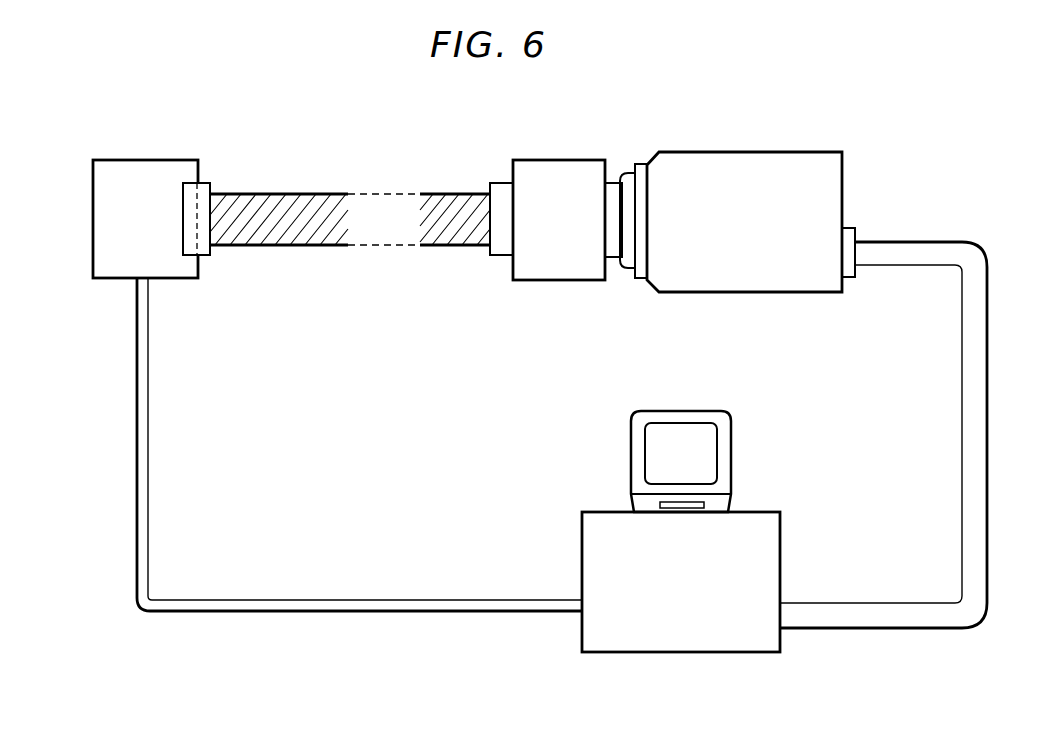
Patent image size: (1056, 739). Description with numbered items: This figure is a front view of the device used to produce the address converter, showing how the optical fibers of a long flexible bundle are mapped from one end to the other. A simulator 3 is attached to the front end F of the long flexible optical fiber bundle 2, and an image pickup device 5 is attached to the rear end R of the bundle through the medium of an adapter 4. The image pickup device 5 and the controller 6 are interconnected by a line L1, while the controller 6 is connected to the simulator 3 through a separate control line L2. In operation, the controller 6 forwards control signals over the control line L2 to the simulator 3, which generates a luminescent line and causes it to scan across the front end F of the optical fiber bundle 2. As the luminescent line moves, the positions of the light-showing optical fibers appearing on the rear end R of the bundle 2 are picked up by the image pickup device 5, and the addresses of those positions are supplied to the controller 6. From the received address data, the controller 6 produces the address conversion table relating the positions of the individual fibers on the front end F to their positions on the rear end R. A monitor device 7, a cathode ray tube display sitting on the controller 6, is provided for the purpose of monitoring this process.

The optical fiber bundle 2 is at (286, 200).
The simulator 3 is at (149, 169).
The adapter 4 is at (558, 167).
The image pickup device 5 is at (746, 157).
The controller 6 is at (776, 553).
The monitor device 7 is at (726, 452).
The front end F is at (206, 187).
The rear end R is at (500, 184).
The line L1 is at (978, 421).
The control line L2 is at (363, 601).